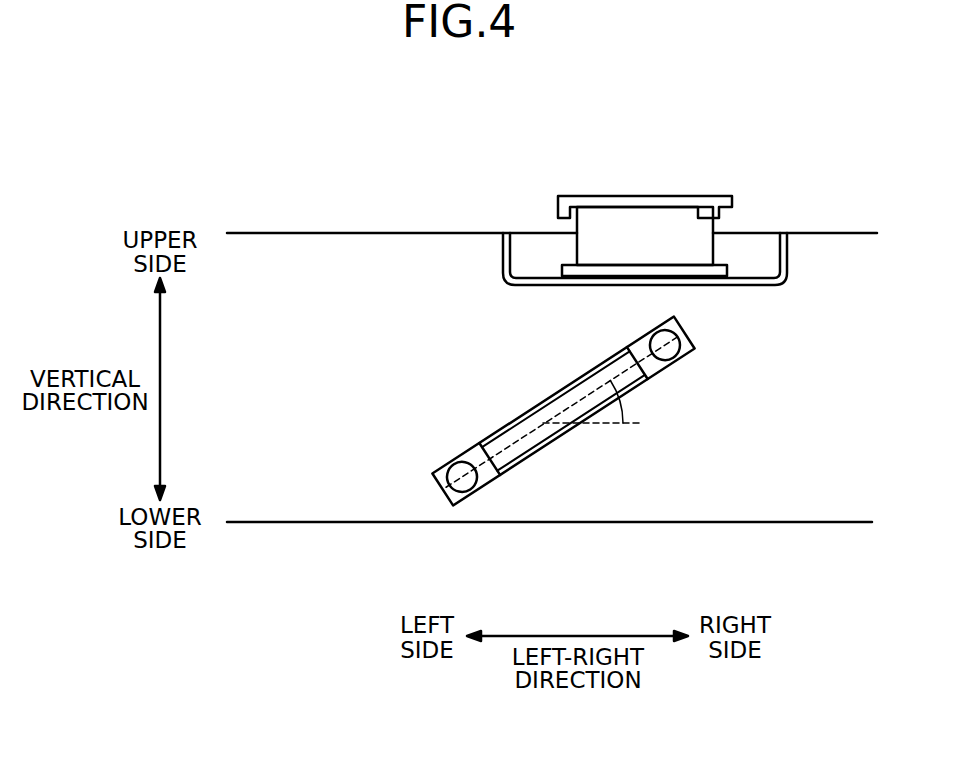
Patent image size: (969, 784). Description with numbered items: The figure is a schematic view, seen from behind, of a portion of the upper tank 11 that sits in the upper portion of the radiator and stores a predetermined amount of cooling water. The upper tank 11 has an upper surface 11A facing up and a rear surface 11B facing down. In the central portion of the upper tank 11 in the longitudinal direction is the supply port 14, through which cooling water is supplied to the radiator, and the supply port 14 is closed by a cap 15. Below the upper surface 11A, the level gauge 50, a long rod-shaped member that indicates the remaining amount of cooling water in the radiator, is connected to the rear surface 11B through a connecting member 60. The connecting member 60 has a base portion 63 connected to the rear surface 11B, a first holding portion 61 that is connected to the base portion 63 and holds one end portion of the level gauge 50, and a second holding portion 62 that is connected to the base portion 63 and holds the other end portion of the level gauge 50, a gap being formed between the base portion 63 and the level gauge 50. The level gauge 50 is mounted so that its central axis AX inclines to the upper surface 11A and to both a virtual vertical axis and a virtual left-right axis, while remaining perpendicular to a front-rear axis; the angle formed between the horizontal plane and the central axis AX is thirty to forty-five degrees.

The upper surface 11A is at (338, 232).
The rear surface 11B is at (386, 442).
The upper tank 11 is at (830, 263).
The supply port 14 is at (678, 207).
The cap 15 is at (710, 195).
The level gauge 50 is at (652, 388).
The connecting member 60 is at (458, 450).
The first holding portion 61 is at (680, 362).
The second holding portion 62 is at (482, 488).
The base portion 63 is at (517, 417).
The central axis AX is at (570, 408).